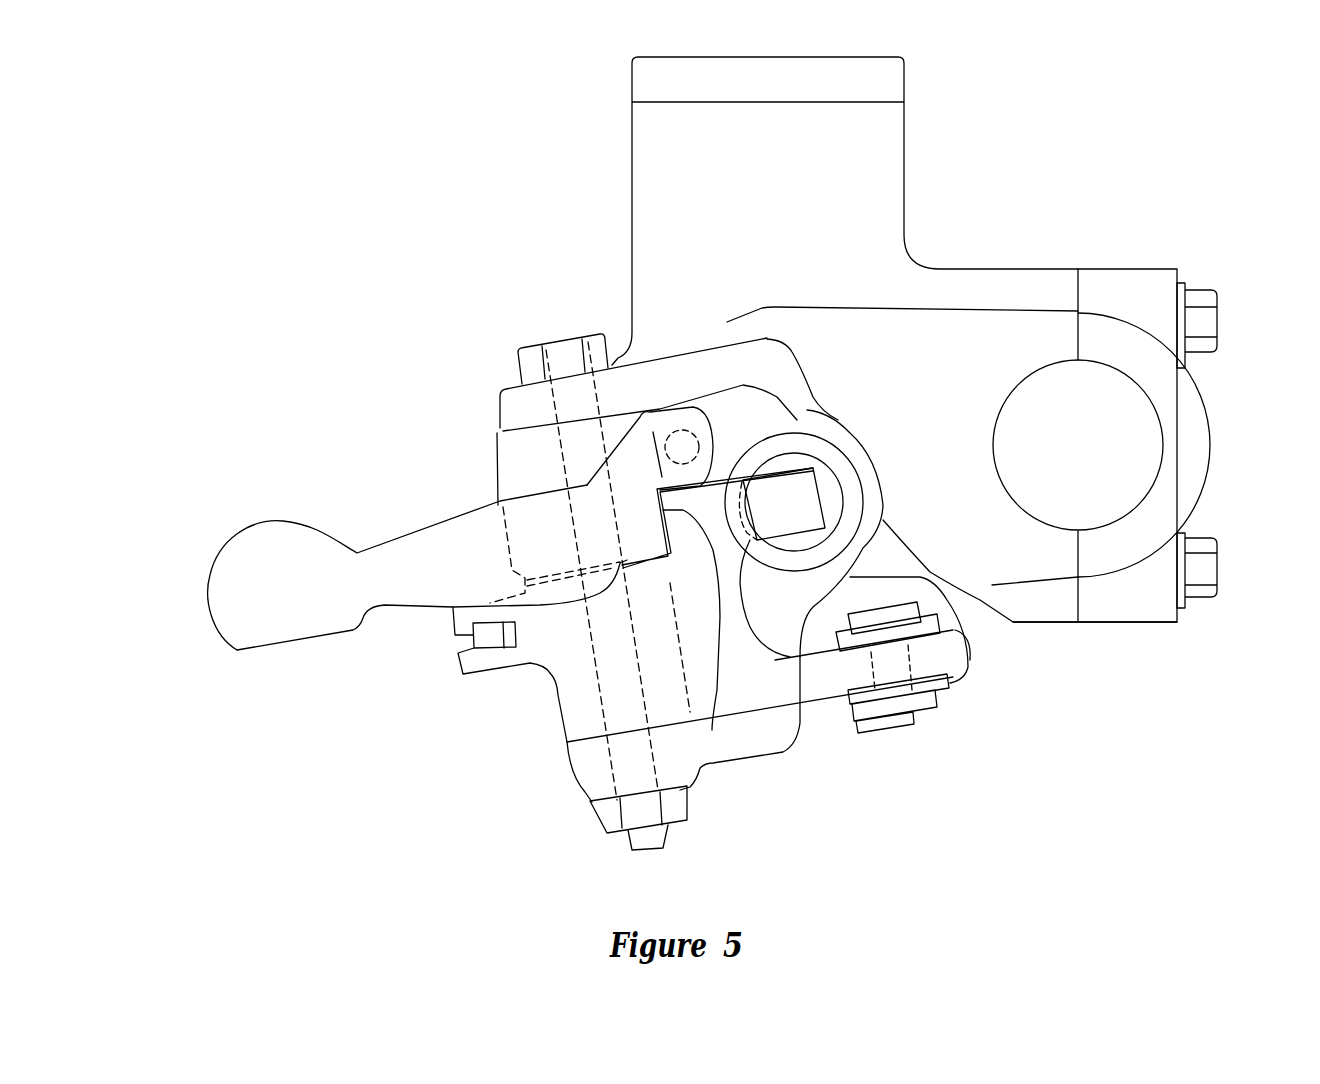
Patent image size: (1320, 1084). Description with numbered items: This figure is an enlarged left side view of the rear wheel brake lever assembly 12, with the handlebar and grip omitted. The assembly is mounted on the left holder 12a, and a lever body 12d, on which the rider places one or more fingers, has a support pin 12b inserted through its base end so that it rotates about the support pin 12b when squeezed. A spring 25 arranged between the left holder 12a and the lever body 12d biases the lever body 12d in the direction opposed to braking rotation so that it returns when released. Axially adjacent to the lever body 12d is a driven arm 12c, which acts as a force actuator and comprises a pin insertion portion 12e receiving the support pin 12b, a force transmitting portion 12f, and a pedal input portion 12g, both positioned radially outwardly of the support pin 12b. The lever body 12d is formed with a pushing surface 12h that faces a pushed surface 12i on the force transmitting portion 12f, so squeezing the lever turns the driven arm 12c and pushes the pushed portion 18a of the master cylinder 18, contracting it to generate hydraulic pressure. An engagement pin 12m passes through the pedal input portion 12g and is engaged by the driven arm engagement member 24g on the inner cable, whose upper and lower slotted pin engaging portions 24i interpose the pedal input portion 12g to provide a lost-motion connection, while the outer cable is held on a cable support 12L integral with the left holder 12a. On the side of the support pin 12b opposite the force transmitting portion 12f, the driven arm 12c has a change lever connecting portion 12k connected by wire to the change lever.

The rear wheel brake lever assembly 12 is at (302, 398).
The left holder 12a is at (1165, 247).
The support pin 12b is at (560, 463).
The driven arm 12c is at (532, 711).
The lever body 12d is at (243, 635).
The pin insertion portion 12e is at (573, 715).
The force transmitting portion 12f is at (795, 523).
The pedal input portion 12g is at (945, 653).
The pushing surface 12h is at (712, 730).
The pushed surface 12i is at (650, 560).
The change lever connecting portion 12k is at (477, 660).
The cable support 12L is at (968, 668).
The engagement pin 12m is at (870, 645).
The master cylinder 18 is at (925, 100).
The pushed portion 18a is at (833, 503).
The driven arm engagement member 24g is at (951, 712).
The pin engaging portions 24i is at (925, 690).
The spring 25 is at (682, 430).